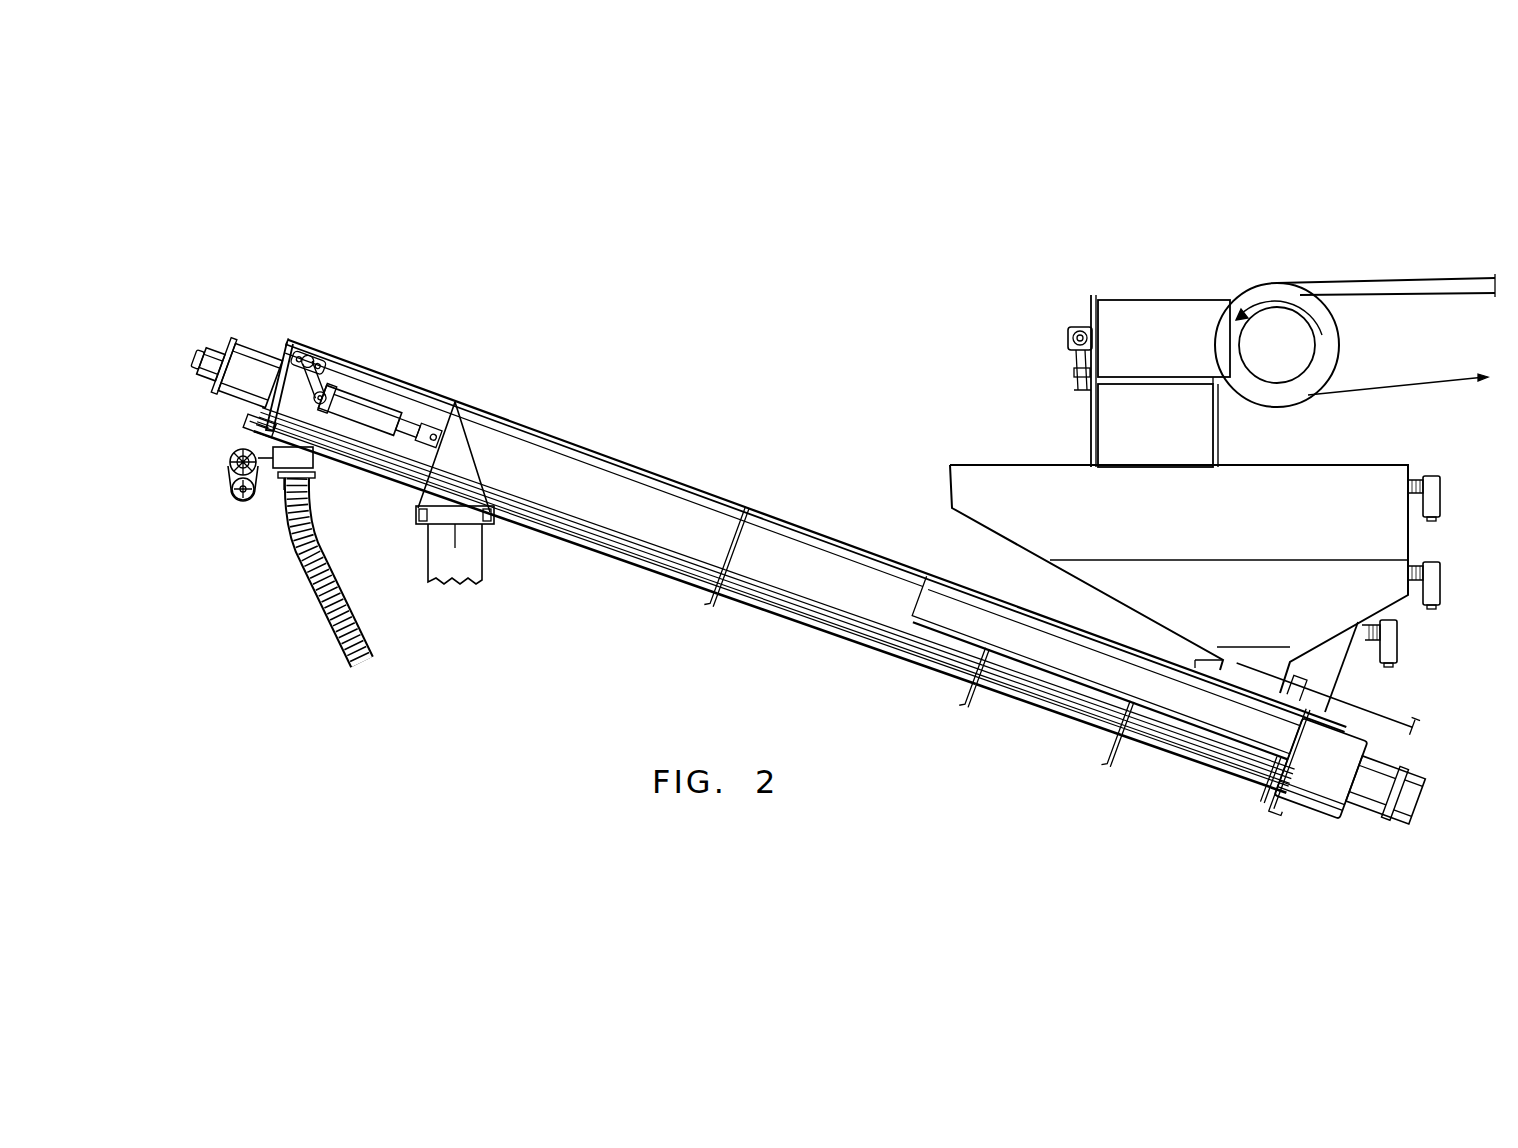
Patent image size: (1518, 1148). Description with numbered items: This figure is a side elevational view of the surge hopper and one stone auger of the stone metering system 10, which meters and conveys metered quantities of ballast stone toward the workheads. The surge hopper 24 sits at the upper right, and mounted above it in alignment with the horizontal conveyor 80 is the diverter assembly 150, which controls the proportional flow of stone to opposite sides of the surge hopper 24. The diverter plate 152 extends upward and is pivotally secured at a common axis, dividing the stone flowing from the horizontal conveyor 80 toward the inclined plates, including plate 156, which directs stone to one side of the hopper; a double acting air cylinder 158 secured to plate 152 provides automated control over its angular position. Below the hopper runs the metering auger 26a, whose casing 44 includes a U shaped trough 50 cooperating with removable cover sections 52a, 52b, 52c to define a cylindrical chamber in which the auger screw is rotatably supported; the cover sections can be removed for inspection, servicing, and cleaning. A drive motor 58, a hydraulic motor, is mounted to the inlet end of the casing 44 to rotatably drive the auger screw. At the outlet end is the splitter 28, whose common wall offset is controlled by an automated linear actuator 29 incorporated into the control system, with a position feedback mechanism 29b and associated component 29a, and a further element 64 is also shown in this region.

The stone metering system 10 is at (825, 541).
The surge hopper 24 is at (966, 452).
The metering auger 26a is at (759, 480).
The splitter 28 is at (300, 480).
The automated linear actuator 29 is at (257, 542).
The upper pulley 29a is at (240, 455).
The position feedback mechanism 29b is at (252, 490).
The casing 44 is at (862, 542).
The U shaped trough 50 is at (800, 576).
The cover section 52a is at (855, 632).
The cover section 52b is at (1040, 702).
The cover section 52c is at (1178, 746).
The drive motor 58 is at (1432, 763).
The hydraulic cylinder 64 is at (375, 408).
The horizontal conveyor 80 is at (1377, 274).
The diverter assembly 150 is at (1101, 346).
The diverter plate 152 is at (1171, 340).
The diverter plate 156 is at (1171, 424).
The double acting air cylinder 158 is at (1072, 345).